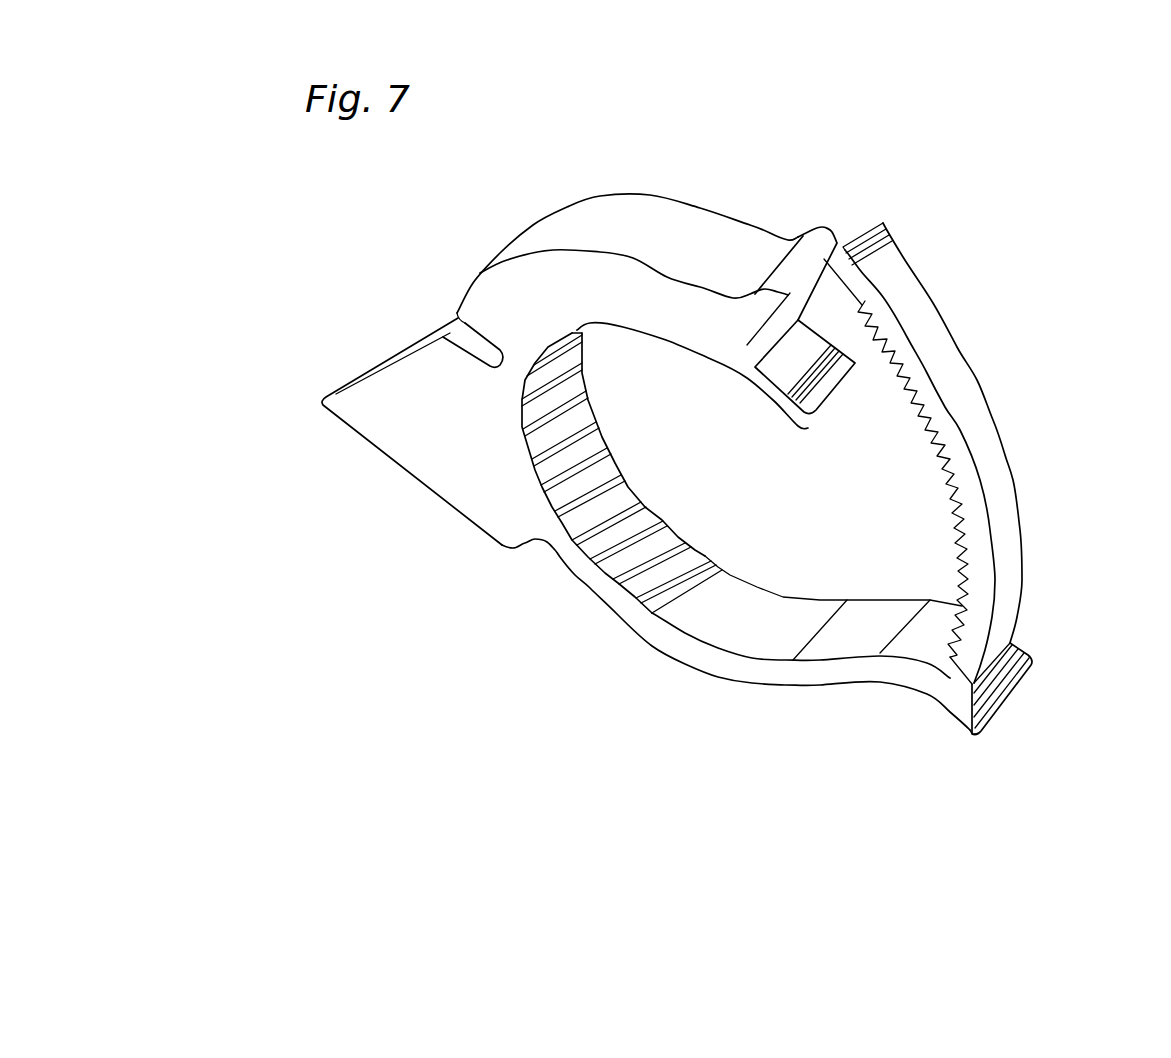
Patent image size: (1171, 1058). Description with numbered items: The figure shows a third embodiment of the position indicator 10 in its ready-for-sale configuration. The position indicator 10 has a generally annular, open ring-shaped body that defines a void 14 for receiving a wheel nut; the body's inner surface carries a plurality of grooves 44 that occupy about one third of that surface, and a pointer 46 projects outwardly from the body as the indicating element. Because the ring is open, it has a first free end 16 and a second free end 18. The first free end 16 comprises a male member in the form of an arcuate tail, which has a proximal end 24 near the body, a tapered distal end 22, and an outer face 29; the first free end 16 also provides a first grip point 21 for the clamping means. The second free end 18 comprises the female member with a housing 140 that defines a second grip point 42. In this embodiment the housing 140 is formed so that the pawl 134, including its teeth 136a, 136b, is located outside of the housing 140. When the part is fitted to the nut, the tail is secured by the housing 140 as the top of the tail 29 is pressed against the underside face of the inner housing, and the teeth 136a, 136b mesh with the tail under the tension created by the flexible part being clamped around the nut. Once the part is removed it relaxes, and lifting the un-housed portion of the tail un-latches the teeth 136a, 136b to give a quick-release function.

The position indicator 10 is at (662, 140).
The void 14 is at (715, 452).
The housing 140 is at (718, 260).
The second grip point 42 is at (848, 236).
The tapered distal end 22 is at (912, 258).
The tooth 136a is at (855, 397).
The tooth 136b is at (858, 418).
The outer face of the tail 29 is at (1030, 522).
The pawl 134 is at (822, 397).
The second free end 18 is at (867, 445).
The pointer 46 is at (482, 440).
The grooves 44 is at (655, 572).
The proximal end 24 is at (1034, 683).
The first free end 16 is at (1072, 743).
The first grip point 21 is at (962, 733).